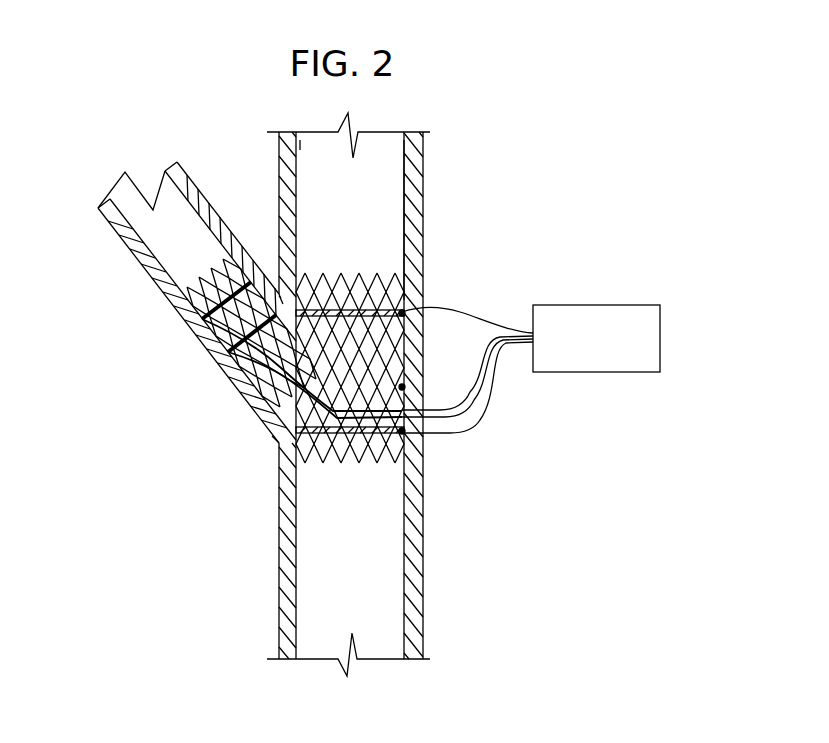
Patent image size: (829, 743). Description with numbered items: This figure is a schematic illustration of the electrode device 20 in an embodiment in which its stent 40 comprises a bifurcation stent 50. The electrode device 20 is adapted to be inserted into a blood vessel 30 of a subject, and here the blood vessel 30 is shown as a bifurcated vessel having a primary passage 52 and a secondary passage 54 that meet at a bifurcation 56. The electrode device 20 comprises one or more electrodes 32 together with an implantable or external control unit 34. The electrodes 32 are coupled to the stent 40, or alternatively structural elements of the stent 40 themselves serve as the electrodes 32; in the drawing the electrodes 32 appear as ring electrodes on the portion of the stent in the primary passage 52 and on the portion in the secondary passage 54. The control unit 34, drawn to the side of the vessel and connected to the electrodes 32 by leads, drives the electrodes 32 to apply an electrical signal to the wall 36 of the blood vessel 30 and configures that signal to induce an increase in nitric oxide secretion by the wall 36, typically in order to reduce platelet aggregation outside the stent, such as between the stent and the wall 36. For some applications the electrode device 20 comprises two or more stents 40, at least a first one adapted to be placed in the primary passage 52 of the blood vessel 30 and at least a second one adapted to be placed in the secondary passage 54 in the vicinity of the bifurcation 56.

The electrode device 20 is at (223, 417).
The blood vessel 30 is at (424, 199).
The electrodes 32 is at (348, 288).
The control unit 34 is at (662, 325).
The wall 36 is at (404, 218).
The stent 40 is at (357, 351).
The bifurcation stent 50 is at (402, 387).
The primary passage 52 is at (437, 255).
The secondary passage 54 is at (203, 205).
The bifurcation 56 is at (272, 298).